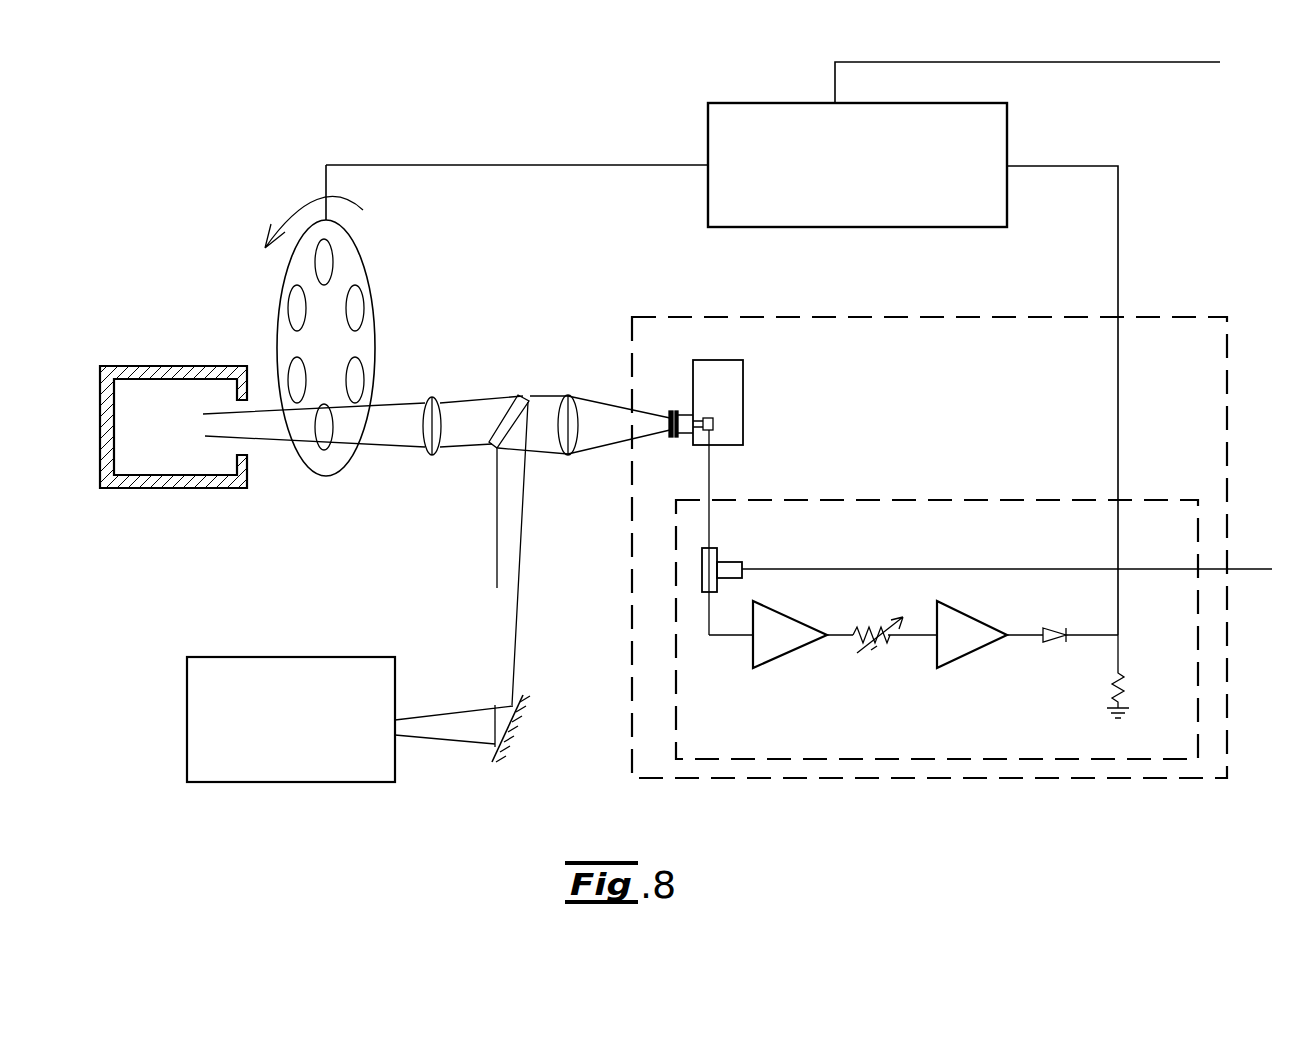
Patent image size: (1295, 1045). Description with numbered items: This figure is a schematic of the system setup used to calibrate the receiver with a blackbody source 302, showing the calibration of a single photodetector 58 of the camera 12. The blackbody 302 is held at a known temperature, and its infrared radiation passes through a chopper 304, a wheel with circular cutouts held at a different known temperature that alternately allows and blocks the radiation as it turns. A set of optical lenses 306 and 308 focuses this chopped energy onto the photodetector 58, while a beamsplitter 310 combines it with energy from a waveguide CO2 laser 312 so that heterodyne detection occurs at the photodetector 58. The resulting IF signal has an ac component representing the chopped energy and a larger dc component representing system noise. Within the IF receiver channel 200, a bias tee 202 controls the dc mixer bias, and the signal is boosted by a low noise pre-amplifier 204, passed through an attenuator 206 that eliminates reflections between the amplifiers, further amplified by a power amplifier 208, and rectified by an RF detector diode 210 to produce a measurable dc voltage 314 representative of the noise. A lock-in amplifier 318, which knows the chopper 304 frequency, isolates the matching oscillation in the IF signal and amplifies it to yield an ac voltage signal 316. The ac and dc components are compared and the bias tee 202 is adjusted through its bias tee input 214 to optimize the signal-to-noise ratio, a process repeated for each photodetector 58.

The camera 12 is at (835, 317).
The photodetector 58 is at (743, 415).
The IF receiver channel 200 is at (945, 500).
The bias tee 202 is at (729, 560).
The pre-amplifier 204 is at (782, 655).
The attenuator 206 is at (887, 647).
The power amplifier 208 is at (972, 653).
The RF detector diode 210 is at (1057, 643).
The bias tee input 214 is at (1245, 562).
The blackbody source 302 is at (211, 366).
The chopper 304 is at (370, 280).
The optical lens 306 is at (434, 396).
The optical lens 308 is at (570, 395).
The beamsplitter 310 is at (522, 396).
The waveguide CO2 laser 312 is at (232, 657).
The dc voltage 314 is at (1118, 636).
The ac voltage signal 316 is at (1080, 62).
The lock-in amplifier 318 is at (785, 103).